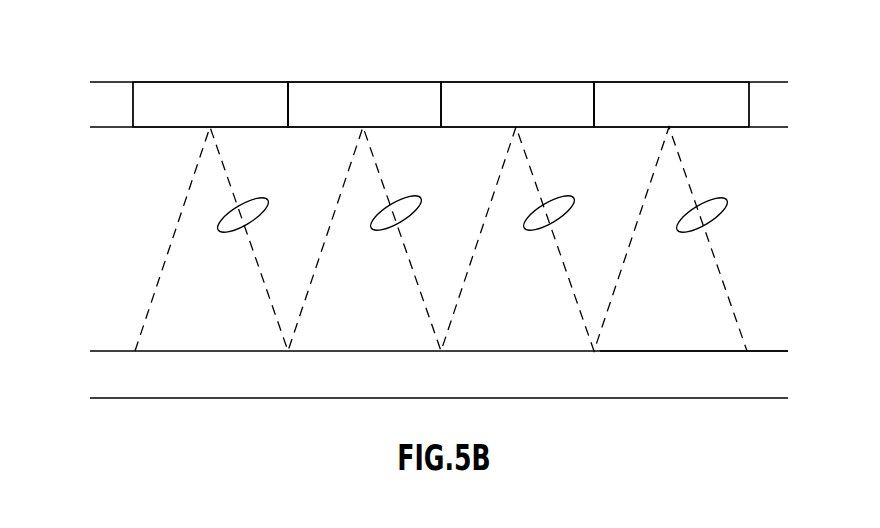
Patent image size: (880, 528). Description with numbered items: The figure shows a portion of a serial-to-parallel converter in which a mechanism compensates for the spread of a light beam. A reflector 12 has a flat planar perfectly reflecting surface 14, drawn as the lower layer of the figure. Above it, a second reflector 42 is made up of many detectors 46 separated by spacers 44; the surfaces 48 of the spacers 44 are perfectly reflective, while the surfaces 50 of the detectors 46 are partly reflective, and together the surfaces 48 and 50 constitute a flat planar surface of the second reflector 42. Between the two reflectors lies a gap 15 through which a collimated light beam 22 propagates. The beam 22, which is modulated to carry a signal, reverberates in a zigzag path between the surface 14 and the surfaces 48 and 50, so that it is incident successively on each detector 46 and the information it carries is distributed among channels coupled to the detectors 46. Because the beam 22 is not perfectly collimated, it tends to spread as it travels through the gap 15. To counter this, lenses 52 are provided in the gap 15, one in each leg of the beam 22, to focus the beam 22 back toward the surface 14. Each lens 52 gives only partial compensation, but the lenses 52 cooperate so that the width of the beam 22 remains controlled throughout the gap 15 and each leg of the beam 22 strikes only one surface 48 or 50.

The reflector 12 is at (665, 386).
The reflecting surface 14 is at (770, 351).
The gap 15 is at (509, 317).
The collimated light beam 22 is at (162, 266).
The second reflector 42 is at (777, 107).
The spacers 44 is at (155, 100).
The detectors 46 is at (370, 100).
The surfaces of spacers 48 is at (237, 127).
The surfaces of detectors 50 is at (300, 127).
The lenses 52 is at (262, 203).